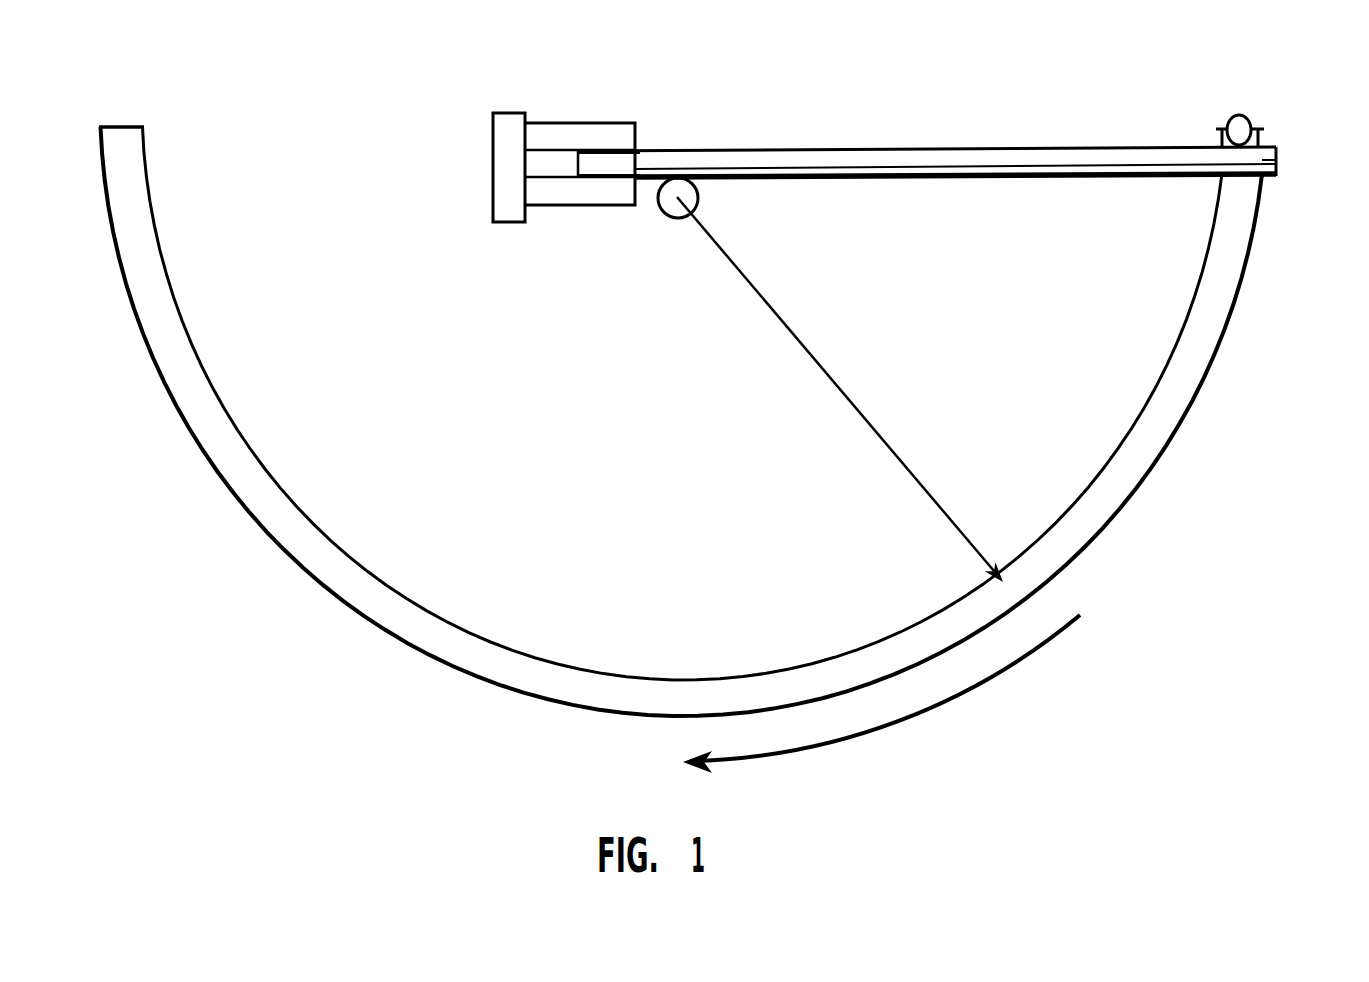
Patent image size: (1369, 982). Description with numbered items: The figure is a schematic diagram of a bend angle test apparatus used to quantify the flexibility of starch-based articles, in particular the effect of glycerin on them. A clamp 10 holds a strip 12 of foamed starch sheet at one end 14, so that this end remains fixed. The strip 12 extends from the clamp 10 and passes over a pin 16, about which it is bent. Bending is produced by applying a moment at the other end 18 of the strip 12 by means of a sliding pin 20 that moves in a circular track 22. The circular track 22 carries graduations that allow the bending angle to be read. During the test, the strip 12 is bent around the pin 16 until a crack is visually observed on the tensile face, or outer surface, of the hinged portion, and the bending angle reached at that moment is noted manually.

The clamp 10 is at (557, 132).
The strip 12 is at (928, 158).
The one end 14 is at (636, 160).
The pin 16 is at (667, 210).
The other end 18 is at (1277, 160).
The sliding pin 20 is at (1243, 126).
The circular track 22 is at (1167, 411).